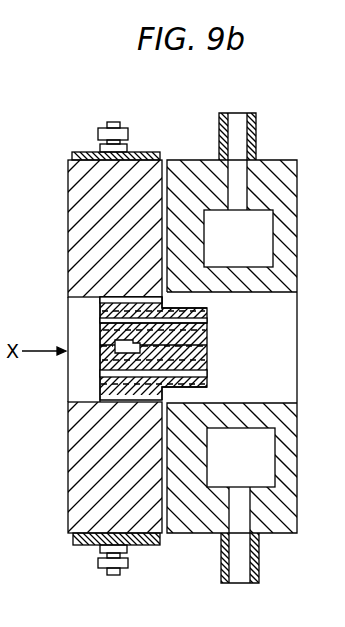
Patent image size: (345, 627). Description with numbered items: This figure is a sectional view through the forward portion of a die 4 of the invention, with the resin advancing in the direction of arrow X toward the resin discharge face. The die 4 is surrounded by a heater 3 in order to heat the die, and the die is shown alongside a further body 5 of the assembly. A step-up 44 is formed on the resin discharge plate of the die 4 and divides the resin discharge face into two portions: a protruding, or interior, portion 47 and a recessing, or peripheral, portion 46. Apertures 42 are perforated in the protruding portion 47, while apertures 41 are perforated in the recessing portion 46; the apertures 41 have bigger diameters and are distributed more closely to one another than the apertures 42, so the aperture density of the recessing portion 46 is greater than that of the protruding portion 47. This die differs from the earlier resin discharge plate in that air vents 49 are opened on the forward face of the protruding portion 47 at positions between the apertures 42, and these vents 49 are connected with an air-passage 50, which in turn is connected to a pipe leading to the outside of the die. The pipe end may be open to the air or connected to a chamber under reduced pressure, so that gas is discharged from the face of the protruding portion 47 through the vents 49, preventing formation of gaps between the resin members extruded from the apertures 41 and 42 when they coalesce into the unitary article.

The heater 3 is at (145, 152).
The die 4 is at (82, 206).
The second housing block 5 is at (272, 190).
The apertures 41 is at (100, 301).
The apertures 42 is at (100, 324).
The step-up 44 is at (185, 394).
The recessing portion 46 is at (163, 297).
The protruding portion 47 is at (207, 334).
The air vents 49 is at (207, 348).
The air-passage 50 is at (100, 355).